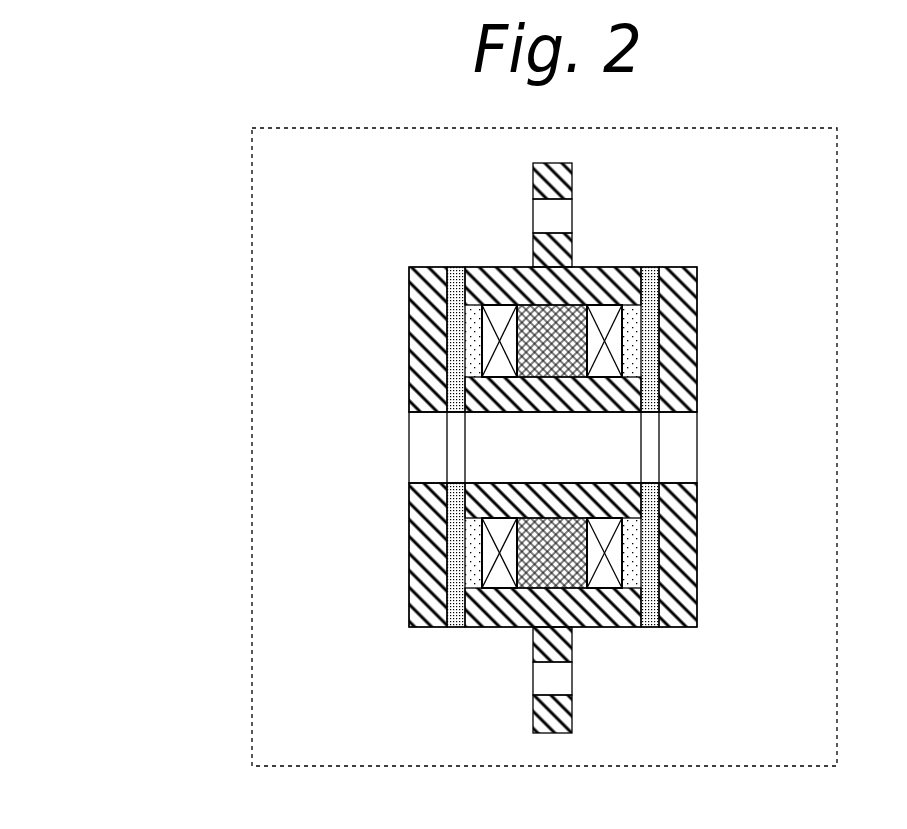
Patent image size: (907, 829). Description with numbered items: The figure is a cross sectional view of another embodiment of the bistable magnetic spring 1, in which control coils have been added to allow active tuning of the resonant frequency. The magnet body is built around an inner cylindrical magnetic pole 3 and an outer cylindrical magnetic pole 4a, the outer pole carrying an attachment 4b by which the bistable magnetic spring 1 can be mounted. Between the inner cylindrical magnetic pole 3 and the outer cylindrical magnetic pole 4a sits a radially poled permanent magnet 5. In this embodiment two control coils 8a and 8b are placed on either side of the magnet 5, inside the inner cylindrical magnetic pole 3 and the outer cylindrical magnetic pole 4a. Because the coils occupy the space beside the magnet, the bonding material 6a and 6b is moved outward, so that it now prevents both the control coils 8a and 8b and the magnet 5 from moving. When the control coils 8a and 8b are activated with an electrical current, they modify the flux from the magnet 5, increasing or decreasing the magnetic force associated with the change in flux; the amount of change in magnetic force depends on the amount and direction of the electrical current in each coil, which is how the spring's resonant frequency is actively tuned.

The bistable magnetic spring 1 is at (246, 437).
The inner cylindrical magnetic pole 3 is at (448, 480).
The outer cylindrical magnetic pole 4a is at (523, 283).
The attachment 4b is at (553, 555).
The radially poled permanent magnet 5 is at (563, 327).
The bonding material 6a is at (456, 533).
The bonding material 6b is at (633, 528).
The control coil 8a is at (490, 553).
The control coil 8b is at (603, 553).